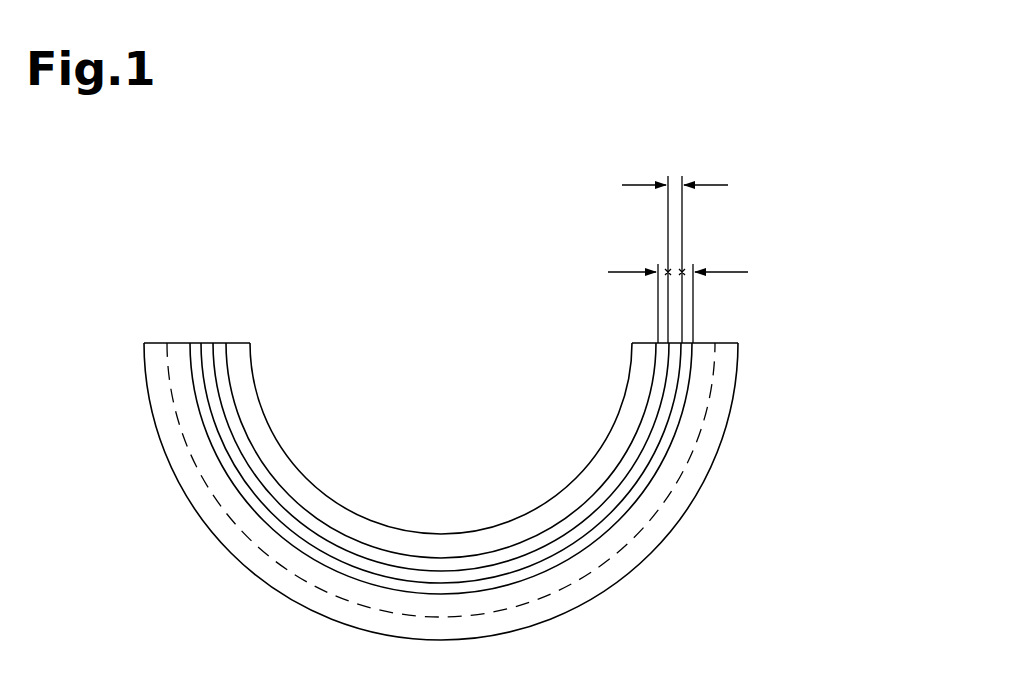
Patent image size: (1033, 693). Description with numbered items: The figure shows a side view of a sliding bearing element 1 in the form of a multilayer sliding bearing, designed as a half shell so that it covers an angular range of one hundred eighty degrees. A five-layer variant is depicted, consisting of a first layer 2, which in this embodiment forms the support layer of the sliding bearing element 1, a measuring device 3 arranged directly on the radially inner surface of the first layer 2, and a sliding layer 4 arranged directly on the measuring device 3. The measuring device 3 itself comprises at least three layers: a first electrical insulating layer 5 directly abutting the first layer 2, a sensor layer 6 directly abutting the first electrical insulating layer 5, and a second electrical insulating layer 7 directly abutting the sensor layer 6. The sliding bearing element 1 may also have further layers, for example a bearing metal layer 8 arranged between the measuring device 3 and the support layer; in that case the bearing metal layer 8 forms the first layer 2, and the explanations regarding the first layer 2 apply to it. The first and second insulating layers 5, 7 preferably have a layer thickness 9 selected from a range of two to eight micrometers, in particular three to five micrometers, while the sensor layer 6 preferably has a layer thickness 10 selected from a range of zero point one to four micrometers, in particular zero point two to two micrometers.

The sliding bearing element 1 is at (467, 326).
The first layer 2 is at (142, 333).
The measuring device 3 is at (216, 298).
The sliding layer 4 is at (255, 329).
The first electrical insulating layer 5 is at (193, 326).
The sensor layer 6 is at (209, 328).
The second electrical insulating layer 7 is at (228, 329).
The bearing metal layer 8 is at (172, 332).
The layer thickness 9 is at (653, 257).
The layer thickness 10 is at (675, 176).